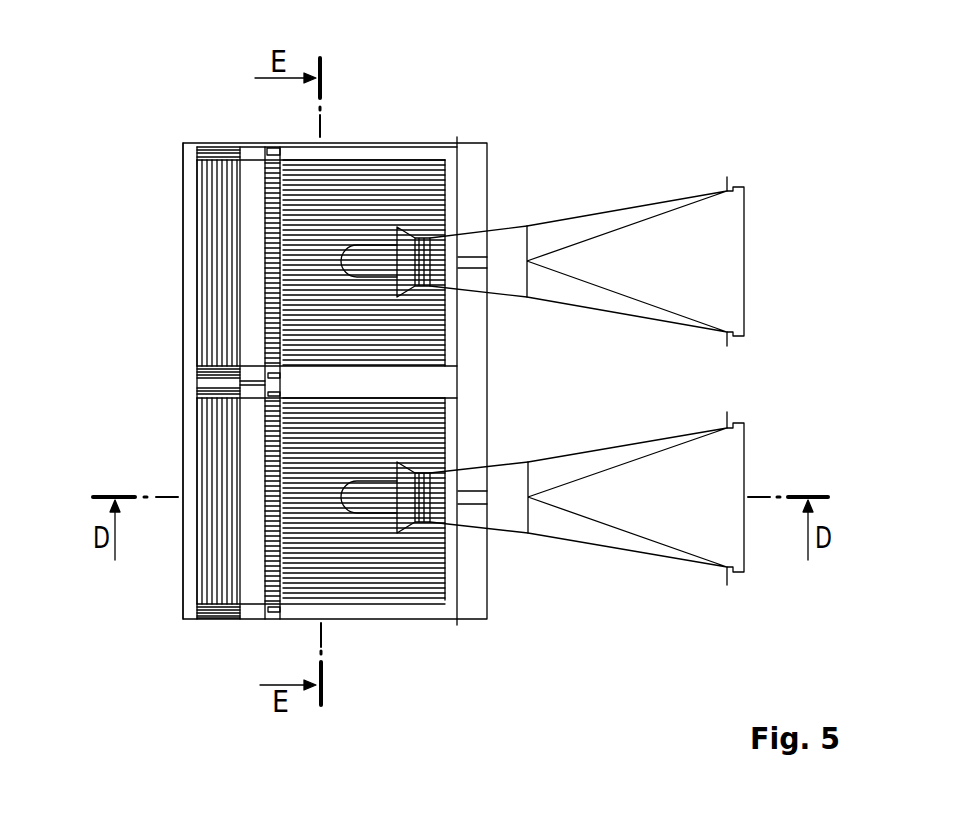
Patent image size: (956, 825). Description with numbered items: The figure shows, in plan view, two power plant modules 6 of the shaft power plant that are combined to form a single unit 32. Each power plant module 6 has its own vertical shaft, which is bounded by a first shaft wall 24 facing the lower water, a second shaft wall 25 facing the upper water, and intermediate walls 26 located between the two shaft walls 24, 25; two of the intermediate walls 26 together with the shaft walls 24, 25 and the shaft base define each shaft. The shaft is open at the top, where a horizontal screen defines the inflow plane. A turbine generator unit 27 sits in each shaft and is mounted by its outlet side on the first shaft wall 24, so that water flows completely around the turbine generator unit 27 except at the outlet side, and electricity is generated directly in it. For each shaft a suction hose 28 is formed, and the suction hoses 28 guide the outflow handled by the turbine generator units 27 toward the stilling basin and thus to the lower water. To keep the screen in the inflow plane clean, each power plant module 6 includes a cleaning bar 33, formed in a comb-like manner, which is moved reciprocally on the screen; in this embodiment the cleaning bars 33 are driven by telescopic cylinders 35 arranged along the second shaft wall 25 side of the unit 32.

The unit 32 is at (113, 87).
The power plant module 6 is at (108, 228).
The first shaft wall 24 is at (448, 176).
The second shaft wall 25 is at (190, 268).
The intermediate wall 26 is at (386, 150).
The turbine generator unit 27 is at (426, 228).
The suction hose 28 is at (655, 215).
The cleaning bar 33 is at (265, 190).
The telescopic cylinder 35 is at (208, 145).